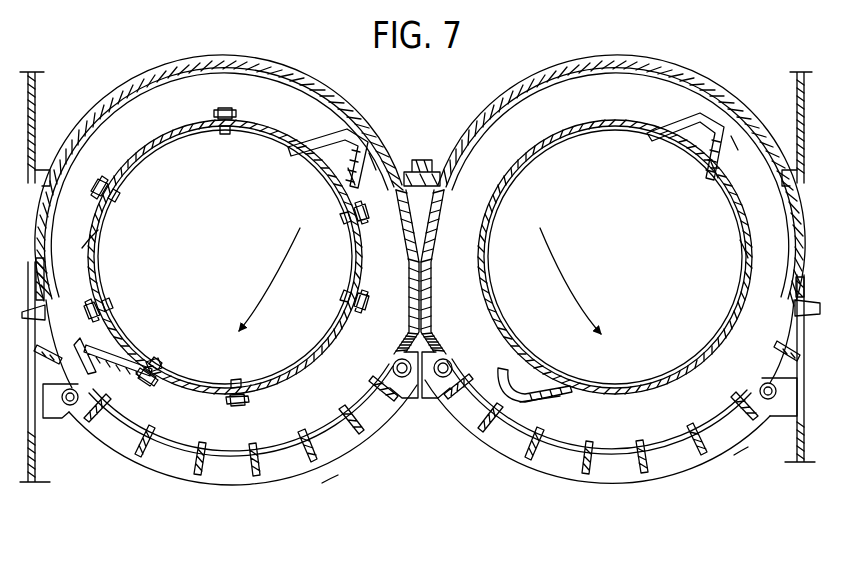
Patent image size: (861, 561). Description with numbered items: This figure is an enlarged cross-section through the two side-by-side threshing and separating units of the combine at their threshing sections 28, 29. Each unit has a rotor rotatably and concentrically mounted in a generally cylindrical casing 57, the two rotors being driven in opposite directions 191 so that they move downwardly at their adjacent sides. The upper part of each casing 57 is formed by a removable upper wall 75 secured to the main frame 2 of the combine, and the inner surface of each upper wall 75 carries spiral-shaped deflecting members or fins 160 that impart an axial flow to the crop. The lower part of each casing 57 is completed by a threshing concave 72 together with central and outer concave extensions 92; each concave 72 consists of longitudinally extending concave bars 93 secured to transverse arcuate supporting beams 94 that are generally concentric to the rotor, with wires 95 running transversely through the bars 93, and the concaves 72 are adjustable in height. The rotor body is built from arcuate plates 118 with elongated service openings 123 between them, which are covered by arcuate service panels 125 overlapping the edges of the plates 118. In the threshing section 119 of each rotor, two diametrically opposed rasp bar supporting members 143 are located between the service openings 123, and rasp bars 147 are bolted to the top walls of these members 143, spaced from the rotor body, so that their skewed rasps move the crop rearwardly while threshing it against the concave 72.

The main frame 2 is at (37, 97).
The upper wall 75 is at (277, 70).
The deflecting member 160 is at (138, 103).
The service panel 125 is at (186, 128).
The arcuate plate 118 is at (270, 141).
The service opening 123 is at (178, 146).
The threshing section 119 is at (83, 245).
The rasp bar supporting member 143 is at (327, 141).
The rasp bar 147 is at (372, 174).
The casing 57 is at (443, 142).
The concave extension 92 is at (73, 258).
The direction of rotation 191 is at (298, 268).
The threshing concave 72 is at (233, 433).
The transverse arcuate supporting beam 94 is at (161, 476).
The wire 95 is at (336, 432).
The concave bar 93 is at (306, 462).
The threshing section 28 is at (333, 474).
The threshing section 29 is at (741, 456).